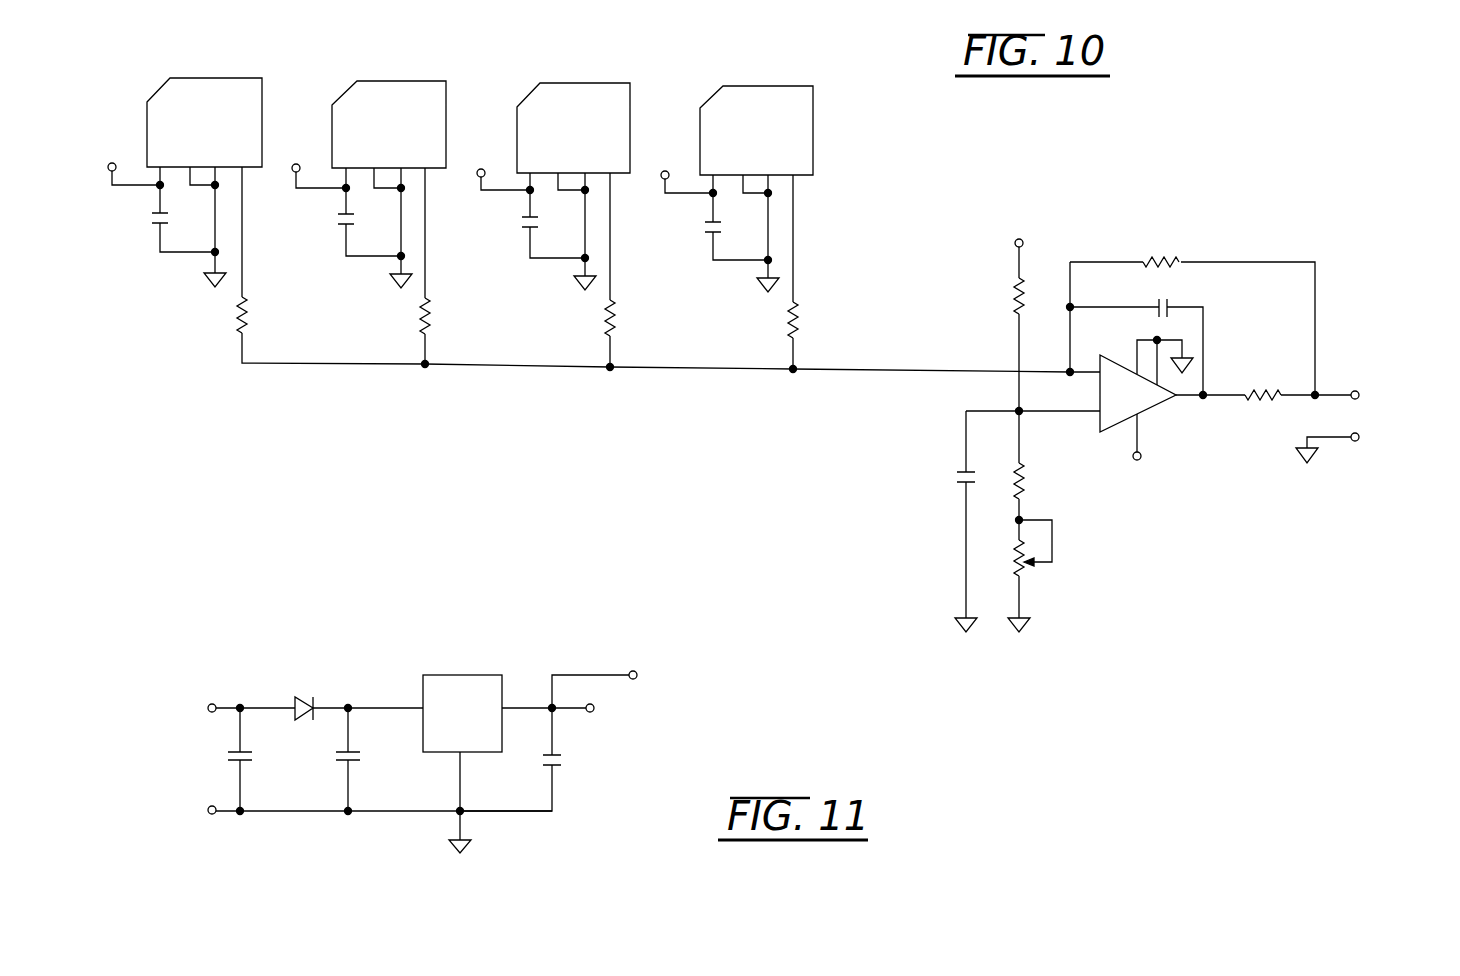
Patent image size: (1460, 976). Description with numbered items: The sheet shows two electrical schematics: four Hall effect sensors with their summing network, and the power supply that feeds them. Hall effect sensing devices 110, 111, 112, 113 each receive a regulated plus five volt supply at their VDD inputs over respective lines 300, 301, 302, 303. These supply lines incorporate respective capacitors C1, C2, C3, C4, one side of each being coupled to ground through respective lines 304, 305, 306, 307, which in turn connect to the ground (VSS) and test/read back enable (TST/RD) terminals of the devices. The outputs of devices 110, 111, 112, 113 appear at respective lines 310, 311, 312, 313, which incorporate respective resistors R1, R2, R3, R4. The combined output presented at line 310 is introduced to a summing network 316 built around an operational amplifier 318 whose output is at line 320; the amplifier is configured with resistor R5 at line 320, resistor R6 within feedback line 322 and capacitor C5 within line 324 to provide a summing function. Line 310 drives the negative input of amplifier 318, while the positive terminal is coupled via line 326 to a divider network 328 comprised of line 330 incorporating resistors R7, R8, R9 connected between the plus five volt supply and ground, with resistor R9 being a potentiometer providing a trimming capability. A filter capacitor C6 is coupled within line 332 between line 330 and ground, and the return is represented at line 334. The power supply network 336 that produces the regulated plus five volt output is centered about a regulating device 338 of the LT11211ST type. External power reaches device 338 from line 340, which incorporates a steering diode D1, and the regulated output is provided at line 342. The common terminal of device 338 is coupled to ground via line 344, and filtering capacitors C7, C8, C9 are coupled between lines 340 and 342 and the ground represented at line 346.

In FIG. 10, the Hall effect sensing device 110 is at (220, 78).
In FIG. 10, the Hall effect sensing device 111 is at (392, 81).
In FIG. 10, the Hall effect sensing device 112 is at (578, 83).
In FIG. 10, the Hall effect sensing device 113 is at (760, 86).
In FIG. 10, the supply line 300 is at (154, 206).
In FIG. 10, the supply line 301 is at (340, 207).
In FIG. 10, the supply line 302 is at (524, 210).
In FIG. 10, the supply line 303 is at (710, 207).
In FIG. 10, the ground line 304 is at (213, 209).
In FIG. 10, the ground line 305 is at (399, 210).
In FIG. 10, the ground line 306 is at (583, 214).
In FIG. 10, the ground line 307 is at (766, 216).
In FIG. 10, the output line 310 is at (243, 274).
In FIG. 10, the output line 311 is at (426, 276).
In FIG. 10, the output line 312 is at (611, 280).
In FIG. 10, the output line 313 is at (794, 273).
In FIG. 10, the summing network 316 is at (1252, 352).
In FIG. 10, the operational amplifier 318 is at (1150, 410).
In FIG. 10, the output line 320 is at (1307, 387).
In FIG. 10, the feedback line 322 is at (1191, 306).
In FIG. 10, the capacitor line 324 is at (1172, 335).
In FIG. 10, the positive input line 326 is at (1043, 413).
In FIG. 10, the divider network 328 is at (996, 424).
In FIG. 10, the divider line 330 is at (1018, 342).
In FIG. 10, the filter line 332 is at (966, 445).
In FIG. 10, the return line 334 is at (1330, 440).
In FIG. 11, the power supply network 336 is at (428, 721).
In FIG. 11, the regulating device 338 is at (485, 674).
In FIG. 11, the input line 340 is at (392, 706).
In FIG. 11, the regulated output line 342 is at (525, 706).
In FIG. 11, the common ground line 344 is at (462, 781).
In FIG. 11, the ground line 346 is at (387, 812).
In FIG. 10, the capacitor C1 is at (152, 226).
In FIG. 10, the capacitor C2 is at (339, 227).
In FIG. 10, the capacitor C3 is at (523, 230).
In FIG. 10, the capacitor C4 is at (706, 235).
In FIG. 10, the capacitor C5 is at (1172, 302).
In FIG. 10, the filter capacitor C6 is at (958, 486).
In FIG. 11, the filtering capacitor C7 is at (250, 763).
In FIG. 11, the filtering capacitor C8 is at (360, 763).
In FIG. 11, the filtering capacitor C9 is at (562, 768).
In FIG. 10, the resistor R1 is at (237, 317).
In FIG. 10, the resistor R2 is at (421, 330).
In FIG. 10, the resistor R3 is at (606, 332).
In FIG. 10, the resistor R4 is at (789, 335).
In FIG. 10, the resistor R5 is at (1262, 402).
In FIG. 10, the resistor R6 is at (1158, 258).
In FIG. 10, the resistor R7 is at (1016, 302).
In FIG. 10, the resistor R8 is at (1025, 483).
In FIG. 10, the potentiometer R9 is at (1022, 573).
In FIG. 11, the steering diode D1 is at (306, 696).